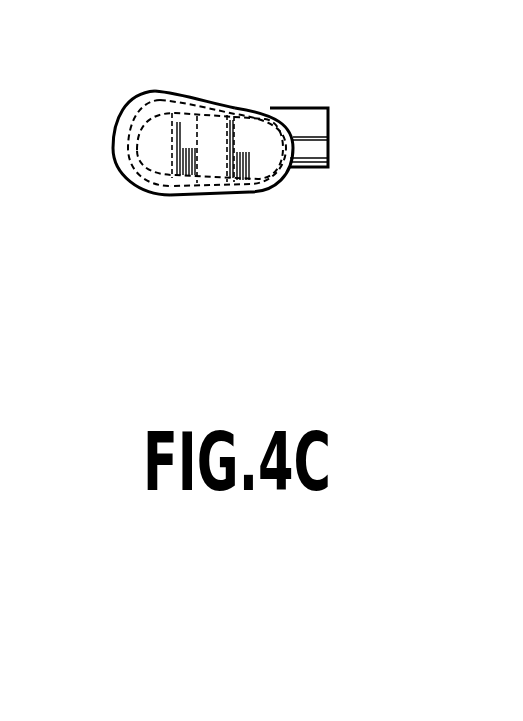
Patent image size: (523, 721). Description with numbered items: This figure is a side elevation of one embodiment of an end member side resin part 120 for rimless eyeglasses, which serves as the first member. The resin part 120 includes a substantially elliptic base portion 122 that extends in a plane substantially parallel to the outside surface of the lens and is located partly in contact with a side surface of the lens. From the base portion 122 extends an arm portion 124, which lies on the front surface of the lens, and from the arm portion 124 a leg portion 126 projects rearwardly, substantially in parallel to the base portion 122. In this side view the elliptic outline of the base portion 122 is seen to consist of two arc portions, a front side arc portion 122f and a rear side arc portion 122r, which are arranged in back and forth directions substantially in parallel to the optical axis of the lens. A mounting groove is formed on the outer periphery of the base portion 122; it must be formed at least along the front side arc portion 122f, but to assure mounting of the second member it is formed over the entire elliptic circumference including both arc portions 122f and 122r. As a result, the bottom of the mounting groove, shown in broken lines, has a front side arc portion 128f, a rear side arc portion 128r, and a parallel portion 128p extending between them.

The end member side resin part 120 is at (198, 242).
The base portion 122 is at (177, 194).
The front side arc portion 122f is at (117, 165).
The rear side arc portion 122r is at (272, 192).
The arm portion 124 is at (158, 96).
The leg portion 126 is at (312, 108).
The front side arc portion of the mounting groove bottom 128f is at (127, 106).
The parallel portion of the mounting groove bottom 128p is at (233, 108).
The rear side arc portion of the mounting groove bottom 128r is at (332, 134).